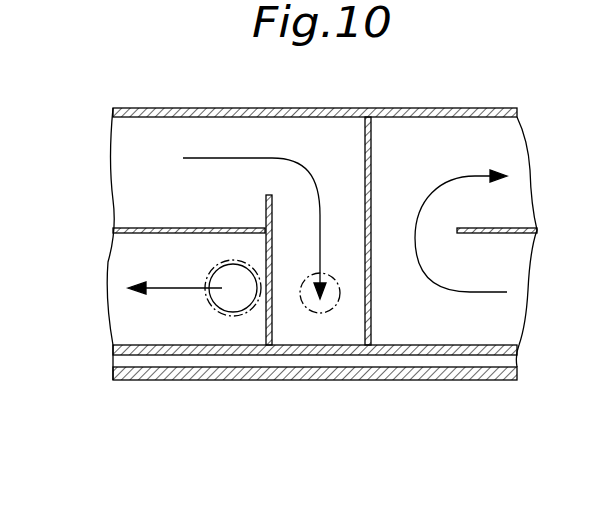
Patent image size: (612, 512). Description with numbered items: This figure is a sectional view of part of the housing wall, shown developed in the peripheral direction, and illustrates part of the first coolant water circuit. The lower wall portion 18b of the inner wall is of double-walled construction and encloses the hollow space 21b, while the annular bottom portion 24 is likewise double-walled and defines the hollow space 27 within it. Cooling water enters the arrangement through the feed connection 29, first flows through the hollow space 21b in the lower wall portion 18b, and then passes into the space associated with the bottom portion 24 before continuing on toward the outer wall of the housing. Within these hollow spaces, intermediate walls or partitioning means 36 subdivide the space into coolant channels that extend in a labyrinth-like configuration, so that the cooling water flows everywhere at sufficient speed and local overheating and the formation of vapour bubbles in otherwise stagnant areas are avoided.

The lower wall portion of inner wall 18b is at (178, 112).
The hollow space 21b is at (412, 140).
The intermediate walls or partitioning means 36 is at (190, 228).
The feed connection 29 is at (230, 298).
The hollow space 27 is at (175, 361).
The annular bottom portion 24 is at (317, 378).